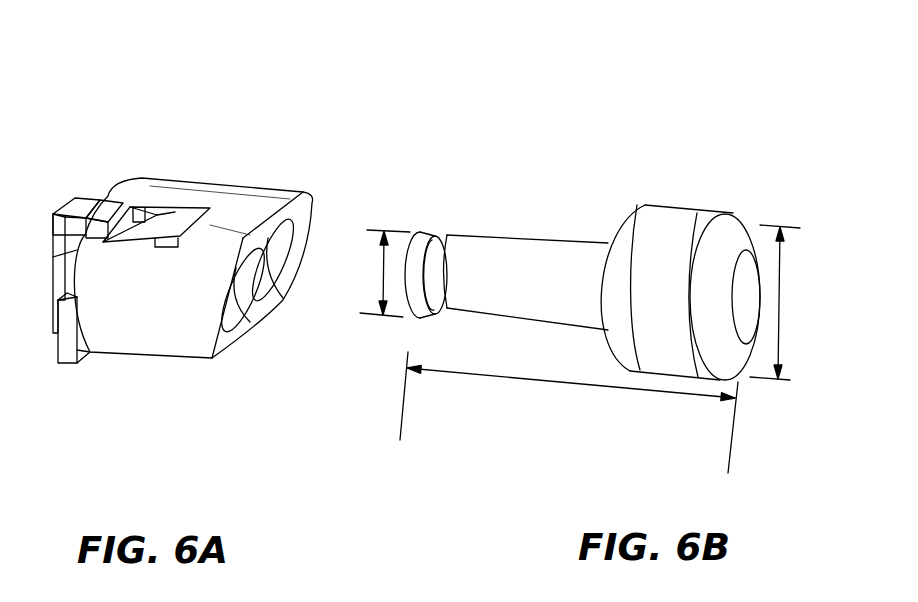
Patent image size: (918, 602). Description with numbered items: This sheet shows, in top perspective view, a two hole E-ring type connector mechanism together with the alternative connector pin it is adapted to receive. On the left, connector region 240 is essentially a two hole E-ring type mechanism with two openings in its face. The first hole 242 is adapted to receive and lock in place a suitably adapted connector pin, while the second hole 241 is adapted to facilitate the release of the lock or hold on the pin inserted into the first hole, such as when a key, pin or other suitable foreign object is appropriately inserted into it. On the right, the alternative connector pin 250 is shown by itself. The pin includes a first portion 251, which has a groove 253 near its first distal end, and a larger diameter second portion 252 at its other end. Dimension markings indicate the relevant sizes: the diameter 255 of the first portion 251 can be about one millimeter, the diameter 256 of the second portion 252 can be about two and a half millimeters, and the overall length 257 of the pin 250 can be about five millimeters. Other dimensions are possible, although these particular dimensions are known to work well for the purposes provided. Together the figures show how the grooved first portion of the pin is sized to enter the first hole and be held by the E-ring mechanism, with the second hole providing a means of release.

In FIG. 6A, the connector region 240 is at (200, 140).
In FIG. 6A, the second hole 241 is at (282, 300).
In FIG. 6A, the first hole 242 is at (244, 318).
In FIG. 6B, the alternative connector pin 250 is at (580, 268).
In FIG. 6B, the first portion 251 is at (538, 240).
In FIG. 6B, the second portion 252 is at (667, 206).
In FIG. 6B, the groove 253 is at (447, 233).
In FIG. 6B, the diameter 255 is at (386, 228).
In FIG. 6B, the diameter 256 is at (767, 380).
In FIG. 6B, the overall length 257 is at (547, 380).